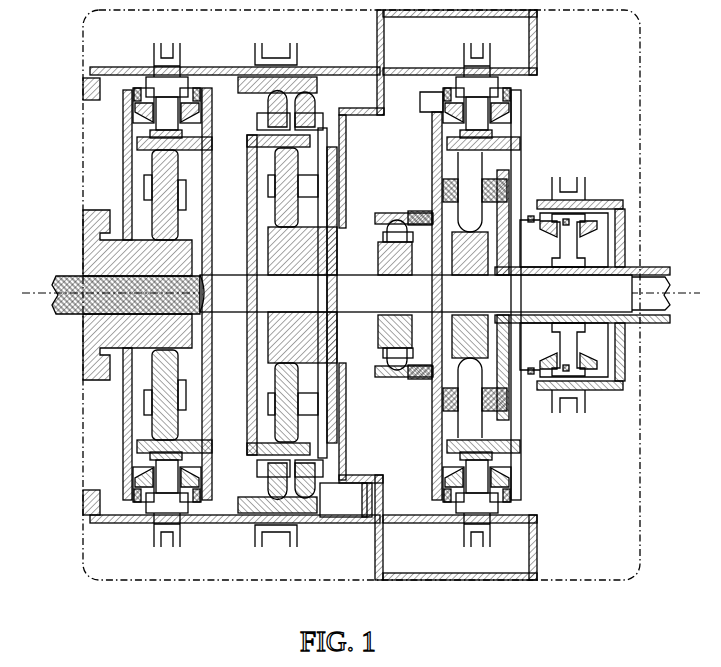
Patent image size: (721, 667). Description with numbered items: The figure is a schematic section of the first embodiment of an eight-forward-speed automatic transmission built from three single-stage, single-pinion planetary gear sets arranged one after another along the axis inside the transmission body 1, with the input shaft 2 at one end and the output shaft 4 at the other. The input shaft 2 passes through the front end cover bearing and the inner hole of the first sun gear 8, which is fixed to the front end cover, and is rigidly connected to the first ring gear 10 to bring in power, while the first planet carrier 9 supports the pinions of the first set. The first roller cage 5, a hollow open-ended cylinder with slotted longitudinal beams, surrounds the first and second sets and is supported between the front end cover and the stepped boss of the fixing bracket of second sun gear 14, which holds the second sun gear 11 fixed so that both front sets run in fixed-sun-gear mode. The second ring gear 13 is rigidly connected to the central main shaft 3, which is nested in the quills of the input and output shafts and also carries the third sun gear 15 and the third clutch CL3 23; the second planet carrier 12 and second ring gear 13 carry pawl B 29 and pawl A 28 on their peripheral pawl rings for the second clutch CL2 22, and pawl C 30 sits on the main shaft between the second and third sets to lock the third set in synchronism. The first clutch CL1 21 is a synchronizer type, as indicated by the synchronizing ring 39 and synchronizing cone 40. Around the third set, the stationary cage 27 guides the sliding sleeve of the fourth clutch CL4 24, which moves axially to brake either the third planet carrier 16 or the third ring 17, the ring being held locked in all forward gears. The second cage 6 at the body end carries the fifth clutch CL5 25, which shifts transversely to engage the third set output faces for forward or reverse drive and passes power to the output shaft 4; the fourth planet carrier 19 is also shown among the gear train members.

The transmission body 1 is at (84, 566).
The input shaft 2 is at (58, 268).
The central main shaft 3 is at (416, 293).
The output shaft 4 is at (627, 272).
The first roller cage 5 is at (346, 514).
The second cage 6 is at (605, 390).
The first sun gear 8 is at (137, 295).
The first planet carrier 9 is at (160, 295).
The first ring gear 10 is at (212, 208).
The second sun gear 11 is at (302, 295).
The second planet carrier 12 is at (249, 382).
The second ring gear 13 is at (323, 147).
The fixing bracket of second sun gear 14 is at (361, 119).
The third sun gear 15 is at (481, 295).
The third planet carrier 16 is at (423, 296).
The third ring 17 is at (521, 440).
The fourth planet carrier 19 is at (361, 423).
The first clutch CL1 21 is at (164, 89).
The second clutch CL2 22 is at (275, 82).
The third clutch CL3 23 is at (392, 243).
The fourth clutch CL4 24 is at (460, 42).
The fifth clutch CL5 25 is at (582, 222).
The stationary cage 27 is at (456, 527).
The pawl A 28 is at (277, 486).
The pawl B 29 is at (297, 503).
The pawl C 30 is at (404, 347).
The synchronizing ring 39 is at (197, 507).
The synchronizing cone 40 is at (506, 120).